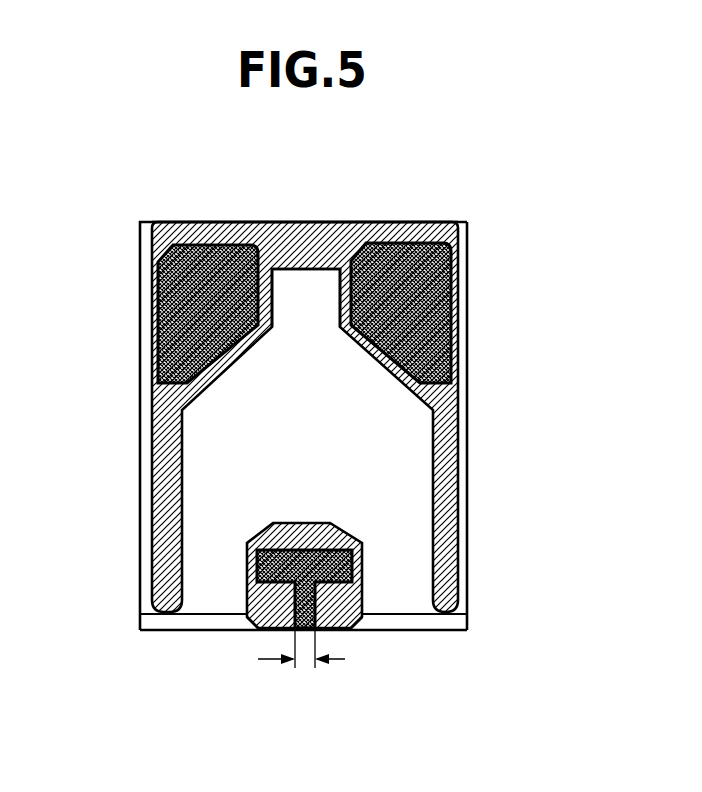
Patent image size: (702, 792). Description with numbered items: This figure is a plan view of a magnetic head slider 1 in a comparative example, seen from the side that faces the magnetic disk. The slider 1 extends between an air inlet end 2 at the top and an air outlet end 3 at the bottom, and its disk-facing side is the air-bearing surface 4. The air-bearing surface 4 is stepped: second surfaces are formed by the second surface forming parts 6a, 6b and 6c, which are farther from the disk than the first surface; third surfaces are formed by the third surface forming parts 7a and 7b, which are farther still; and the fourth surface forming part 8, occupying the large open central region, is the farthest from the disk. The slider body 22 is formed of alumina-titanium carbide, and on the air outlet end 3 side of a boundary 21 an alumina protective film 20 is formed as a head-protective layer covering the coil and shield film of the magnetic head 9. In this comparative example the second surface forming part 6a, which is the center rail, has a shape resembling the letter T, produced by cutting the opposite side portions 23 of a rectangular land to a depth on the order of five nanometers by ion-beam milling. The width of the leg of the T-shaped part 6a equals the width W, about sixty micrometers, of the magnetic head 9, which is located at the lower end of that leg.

The magnetic head slider 1 is at (100, 356).
The air inlet end 2 is at (313, 222).
The air outlet end 3 is at (163, 633).
The air-bearing surface 4 is at (395, 438).
The second surface forming part 6a is at (362, 572).
The second surface forming part 6b is at (165, 315).
The second surface forming part 6c is at (448, 302).
The third surface forming part 7a is at (273, 541).
The third surface forming part 7b is at (229, 235).
The fourth surface forming part 8 is at (305, 438).
The magnetic head 9 is at (305, 633).
The alumina protective film 20 is at (440, 620).
The boundary 21 is at (470, 613).
The slider body 22 is at (467, 470).
The opposite side portions 23 is at (256, 614).